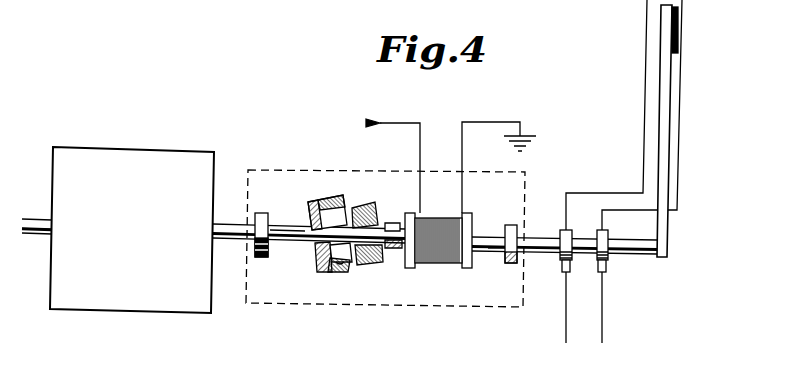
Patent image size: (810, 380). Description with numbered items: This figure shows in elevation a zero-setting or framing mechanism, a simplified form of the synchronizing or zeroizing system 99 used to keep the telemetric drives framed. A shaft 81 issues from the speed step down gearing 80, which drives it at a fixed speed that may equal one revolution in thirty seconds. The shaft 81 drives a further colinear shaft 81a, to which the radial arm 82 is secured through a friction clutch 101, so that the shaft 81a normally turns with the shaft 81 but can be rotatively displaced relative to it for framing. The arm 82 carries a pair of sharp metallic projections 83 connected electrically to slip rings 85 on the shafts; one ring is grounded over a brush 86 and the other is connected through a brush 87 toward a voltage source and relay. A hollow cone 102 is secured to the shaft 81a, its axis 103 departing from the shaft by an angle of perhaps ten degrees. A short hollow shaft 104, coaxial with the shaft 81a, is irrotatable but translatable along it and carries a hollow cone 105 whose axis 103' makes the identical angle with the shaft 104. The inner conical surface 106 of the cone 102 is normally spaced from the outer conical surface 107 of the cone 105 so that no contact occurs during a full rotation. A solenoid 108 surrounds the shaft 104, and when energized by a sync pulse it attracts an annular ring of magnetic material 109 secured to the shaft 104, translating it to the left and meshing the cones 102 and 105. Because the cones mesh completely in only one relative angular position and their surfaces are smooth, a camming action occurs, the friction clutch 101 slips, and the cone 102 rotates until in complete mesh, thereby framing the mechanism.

The speed step down gearing 80 is at (136, 305).
The shaft 81 is at (42, 224).
The colinear shaft 81a is at (284, 244).
The radial arm 82 is at (664, 152).
The sharp metallic projections 83 is at (678, 42).
The slip rings 85 is at (561, 232).
The brush 86 is at (563, 266).
The brush 87 is at (607, 266).
The synchronizing or zeroizing system 99 is at (378, 303).
The friction clutch 101 is at (262, 213).
The hollow cone 102 is at (318, 262).
The axis of cone 102 103 is at (313, 212).
The axis of cone 105 103' is at (402, 222).
The hollow shaft 104 is at (506, 236).
The hollow cone 105 is at (374, 204).
The inner conical surface 106 is at (340, 266).
The outer conical surface 107 is at (376, 265).
The solenoid 108 is at (432, 268).
The annular ring of magnetic material 109 is at (504, 262).